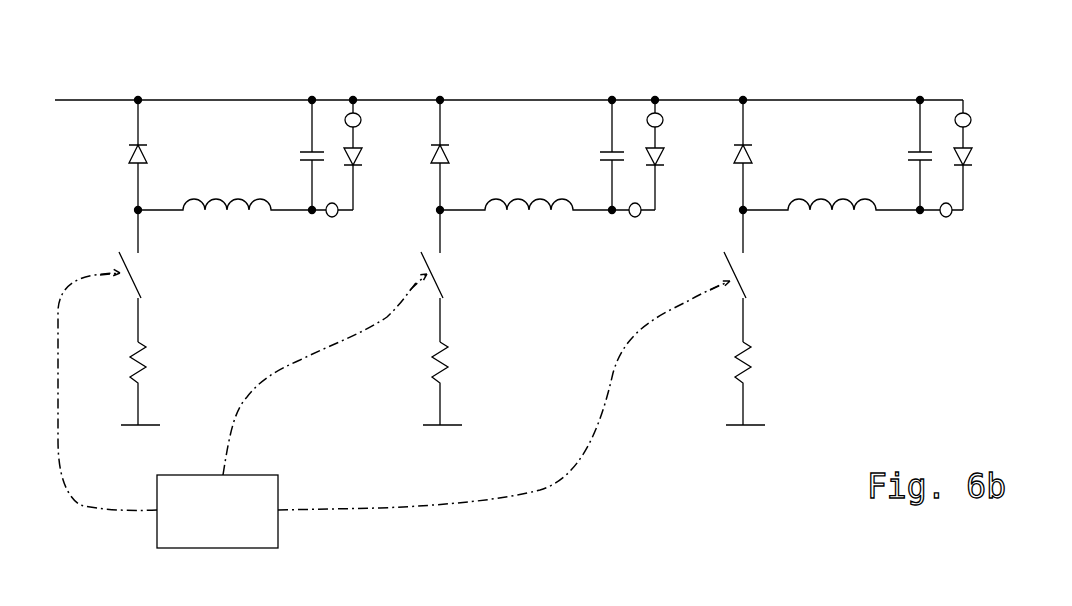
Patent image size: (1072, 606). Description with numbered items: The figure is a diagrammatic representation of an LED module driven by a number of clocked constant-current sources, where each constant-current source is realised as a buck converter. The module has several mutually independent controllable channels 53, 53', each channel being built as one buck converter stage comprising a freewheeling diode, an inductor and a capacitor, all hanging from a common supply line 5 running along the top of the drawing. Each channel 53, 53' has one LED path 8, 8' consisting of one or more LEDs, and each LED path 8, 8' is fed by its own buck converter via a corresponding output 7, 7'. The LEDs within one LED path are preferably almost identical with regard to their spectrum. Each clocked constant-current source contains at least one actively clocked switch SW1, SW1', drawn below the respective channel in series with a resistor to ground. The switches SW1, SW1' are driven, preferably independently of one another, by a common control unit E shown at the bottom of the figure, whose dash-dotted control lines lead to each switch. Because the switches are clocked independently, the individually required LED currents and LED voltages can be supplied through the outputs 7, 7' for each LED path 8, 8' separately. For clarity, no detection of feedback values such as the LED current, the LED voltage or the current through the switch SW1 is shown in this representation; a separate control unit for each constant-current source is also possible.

The power supply line 5 is at (62, 117).
The output 7 is at (329, 121).
The output 7' is at (631, 121).
The LED path 8 is at (372, 181).
The LED path 8' is at (678, 181).
The channel 53 is at (265, 172).
The channel 53' is at (571, 172).
The actively clocked switch SW1 is at (156, 317).
The actively clocked switch SW1' is at (461, 317).
The control unit E is at (394, 408).